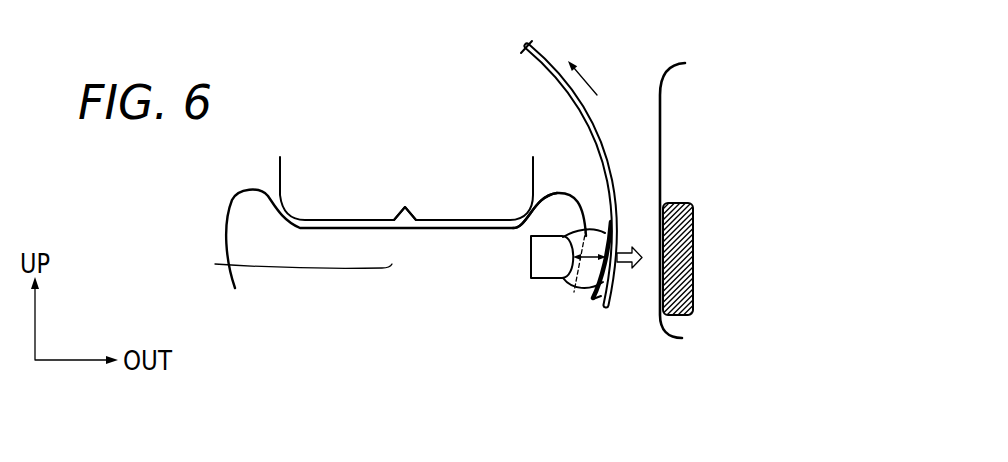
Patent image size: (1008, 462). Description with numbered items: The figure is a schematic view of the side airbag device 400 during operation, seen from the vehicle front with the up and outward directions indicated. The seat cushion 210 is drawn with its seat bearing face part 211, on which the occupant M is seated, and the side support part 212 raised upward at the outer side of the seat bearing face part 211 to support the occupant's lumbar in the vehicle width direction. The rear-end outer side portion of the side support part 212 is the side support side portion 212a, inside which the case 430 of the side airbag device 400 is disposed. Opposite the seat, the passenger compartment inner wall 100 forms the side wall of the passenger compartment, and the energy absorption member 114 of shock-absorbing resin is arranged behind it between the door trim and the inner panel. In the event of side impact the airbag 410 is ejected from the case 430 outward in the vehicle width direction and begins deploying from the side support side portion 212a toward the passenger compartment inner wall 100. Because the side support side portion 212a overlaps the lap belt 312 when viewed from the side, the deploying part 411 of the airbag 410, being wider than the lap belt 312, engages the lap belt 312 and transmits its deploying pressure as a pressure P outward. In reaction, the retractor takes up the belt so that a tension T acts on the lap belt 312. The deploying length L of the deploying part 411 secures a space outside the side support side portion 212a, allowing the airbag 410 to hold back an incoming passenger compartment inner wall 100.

The passenger compartment inner wall 100 is at (662, 107).
The energy absorption (EA) member 114 is at (694, 243).
The seat cushion 210 is at (334, 222).
The seat bearing face part 211 is at (215, 264).
The side support part 212 is at (258, 236).
The side support side portion 212a is at (518, 263).
The lap belt 312 is at (550, 63).
The side airbag device 400 is at (549, 332).
The airbag 410 is at (583, 295).
The deploying part 411 is at (566, 280).
The case 430 is at (545, 279).
The occupant M is at (406, 195).
The tension T is at (590, 74).
The deploying length L is at (596, 254).
The pressure P is at (622, 266).